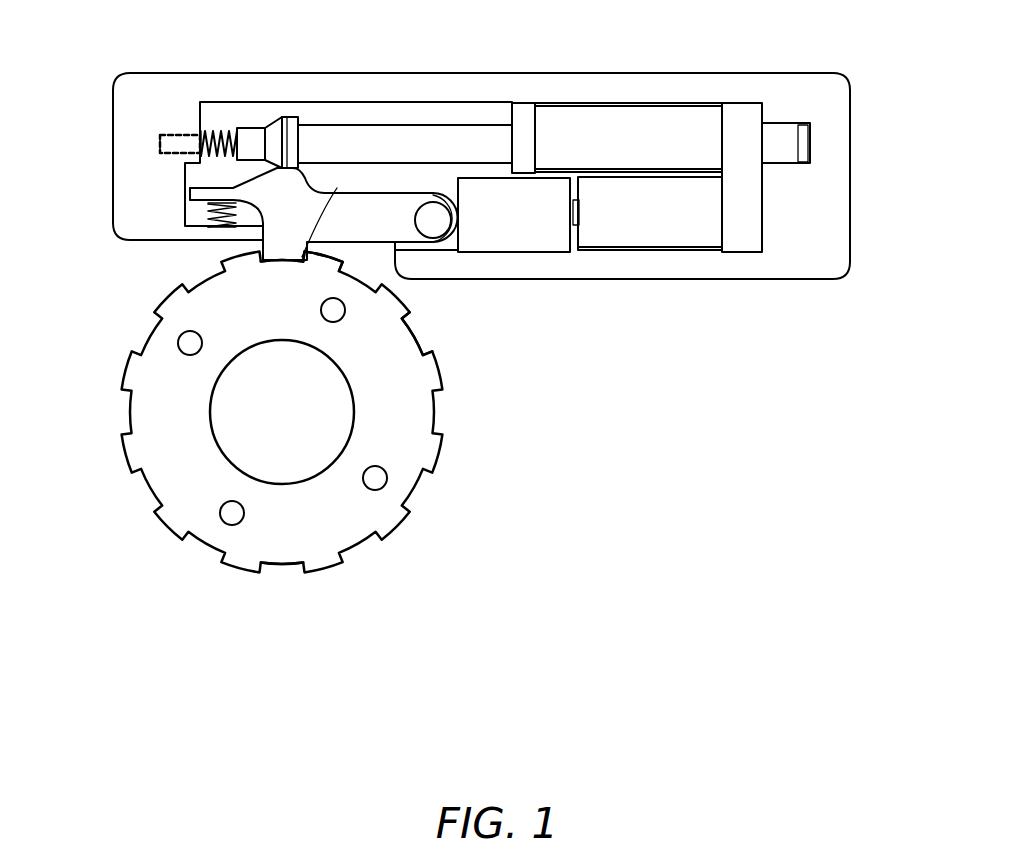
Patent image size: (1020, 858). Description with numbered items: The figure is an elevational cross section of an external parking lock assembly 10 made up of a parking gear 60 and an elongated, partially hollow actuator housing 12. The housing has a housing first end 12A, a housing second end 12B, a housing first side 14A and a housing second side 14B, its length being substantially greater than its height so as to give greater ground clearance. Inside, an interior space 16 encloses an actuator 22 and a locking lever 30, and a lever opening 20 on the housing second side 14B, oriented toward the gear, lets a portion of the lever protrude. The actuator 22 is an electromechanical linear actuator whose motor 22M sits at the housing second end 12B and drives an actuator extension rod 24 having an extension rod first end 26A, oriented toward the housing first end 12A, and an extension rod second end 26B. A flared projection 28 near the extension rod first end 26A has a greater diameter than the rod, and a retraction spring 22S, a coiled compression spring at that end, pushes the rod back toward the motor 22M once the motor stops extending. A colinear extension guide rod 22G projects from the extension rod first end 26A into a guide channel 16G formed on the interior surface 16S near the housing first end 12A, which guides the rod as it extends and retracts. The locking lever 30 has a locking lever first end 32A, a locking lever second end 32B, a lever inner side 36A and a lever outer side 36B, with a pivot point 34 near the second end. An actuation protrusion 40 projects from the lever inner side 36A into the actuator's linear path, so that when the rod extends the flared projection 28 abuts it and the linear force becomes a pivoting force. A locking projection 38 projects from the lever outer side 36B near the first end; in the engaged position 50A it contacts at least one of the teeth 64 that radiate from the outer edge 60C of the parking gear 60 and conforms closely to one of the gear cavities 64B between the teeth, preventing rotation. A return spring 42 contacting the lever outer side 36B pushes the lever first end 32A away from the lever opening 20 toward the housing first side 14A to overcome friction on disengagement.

The external parking lock assembly 10 is at (709, 384).
The actuator housing 12 is at (128, 80).
The housing first end 12A is at (113, 175).
The housing second end 12B is at (849, 177).
The housing first side 14A is at (553, 73).
The housing second side 14B is at (647, 282).
The interior space 16 is at (368, 110).
The interior surface 16S is at (200, 115).
The guide channel 16G is at (160, 145).
The lever opening 20 is at (268, 225).
The actuator 22 is at (628, 102).
The extension guide rod 22G is at (157, 130).
The motor 22M is at (703, 132).
The retraction spring 22S is at (222, 132).
The actuator extension rod 24 is at (438, 142).
The extension rod first end 26A is at (252, 133).
The extension rod second end 26B is at (498, 142).
The flared projection 28 is at (279, 128).
The locking lever 30 is at (375, 232).
The locking lever first end 32A is at (185, 192).
The locking lever second end 32B is at (458, 228).
The pivot point 34 is at (433, 228).
The lever inner side 36A is at (358, 193).
The lever outer side 36B is at (187, 213).
The locking projection 38 is at (325, 211).
The actuation protrusion 40 is at (286, 117).
The return spring 42 is at (210, 212).
The engaged position 50A is at (327, 224).
The parking gear 60 is at (415, 407).
The outer edge 60C is at (281, 566).
The teeth 64 is at (437, 460).
The gear cavities 64B is at (280, 263).